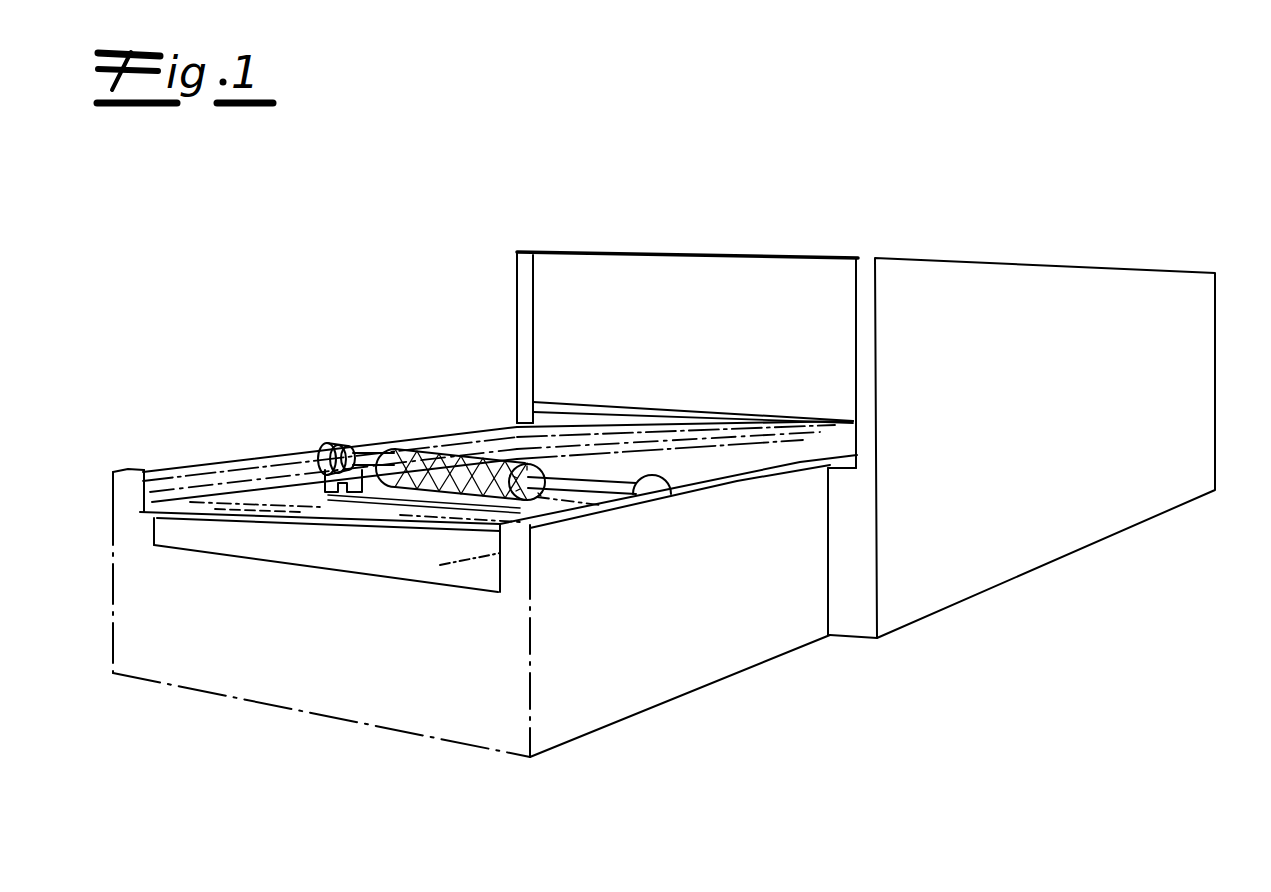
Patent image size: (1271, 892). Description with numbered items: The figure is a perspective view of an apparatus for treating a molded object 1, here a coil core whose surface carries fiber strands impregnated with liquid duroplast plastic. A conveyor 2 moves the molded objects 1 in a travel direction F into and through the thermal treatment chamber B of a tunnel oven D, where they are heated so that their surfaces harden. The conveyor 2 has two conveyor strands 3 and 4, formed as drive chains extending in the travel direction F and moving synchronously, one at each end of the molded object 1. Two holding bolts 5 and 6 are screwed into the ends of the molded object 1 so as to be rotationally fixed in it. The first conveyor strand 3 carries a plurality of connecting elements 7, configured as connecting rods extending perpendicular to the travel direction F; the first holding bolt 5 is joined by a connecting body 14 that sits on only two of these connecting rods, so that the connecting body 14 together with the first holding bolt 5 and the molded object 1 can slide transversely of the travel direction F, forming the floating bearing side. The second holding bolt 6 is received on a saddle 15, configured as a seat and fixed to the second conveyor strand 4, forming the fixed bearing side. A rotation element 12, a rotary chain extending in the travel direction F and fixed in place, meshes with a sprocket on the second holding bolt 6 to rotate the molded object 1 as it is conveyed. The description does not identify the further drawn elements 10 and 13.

The molded object 1 is at (450, 462).
The conveyor 2 is at (428, 569).
The first conveyor strand 3 is at (465, 566).
The second conveyor strand 4 is at (167, 536).
The first holding bolt 5 is at (583, 485).
The second holding bolt 6 is at (377, 458).
The connecting elements 7 is at (387, 497).
The guide rail 10 is at (208, 453).
The rotation element 12 is at (200, 483).
The bearing 13 is at (333, 447).
The connecting body 14 is at (660, 485).
The saddle 15 is at (322, 458).
The thermal treatment chamber B is at (962, 280).
The tunnel oven D is at (1008, 128).
The travel direction F is at (688, 520).